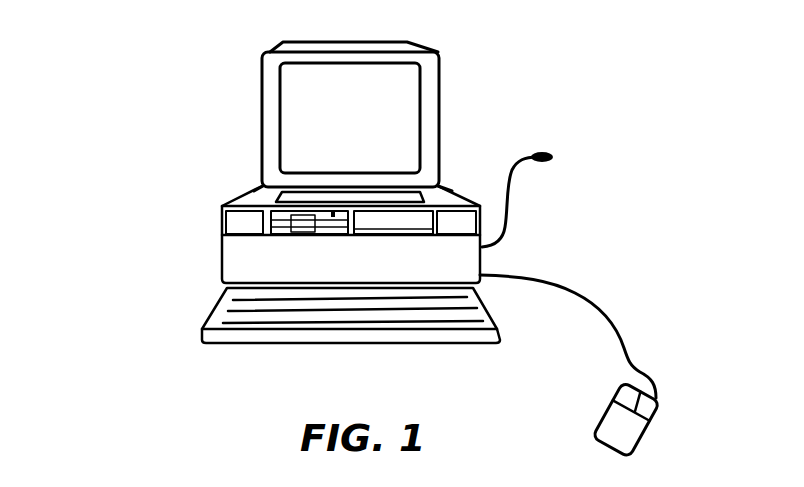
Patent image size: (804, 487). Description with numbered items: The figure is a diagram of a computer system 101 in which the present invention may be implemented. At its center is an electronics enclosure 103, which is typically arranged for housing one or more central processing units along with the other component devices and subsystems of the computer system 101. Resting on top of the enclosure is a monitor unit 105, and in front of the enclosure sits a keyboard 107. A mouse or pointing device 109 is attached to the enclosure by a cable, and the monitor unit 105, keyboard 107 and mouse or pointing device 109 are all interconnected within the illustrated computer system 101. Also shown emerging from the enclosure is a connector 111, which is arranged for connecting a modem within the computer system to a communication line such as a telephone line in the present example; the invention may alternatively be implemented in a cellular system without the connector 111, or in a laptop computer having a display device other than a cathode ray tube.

The computer system 101 is at (676, 246).
The electronics enclosure 103 is at (235, 252).
The monitor unit 105 is at (253, 142).
The keyboard 107 is at (207, 332).
The mouse or pointing device 109 is at (663, 402).
The connector 111 is at (542, 151).